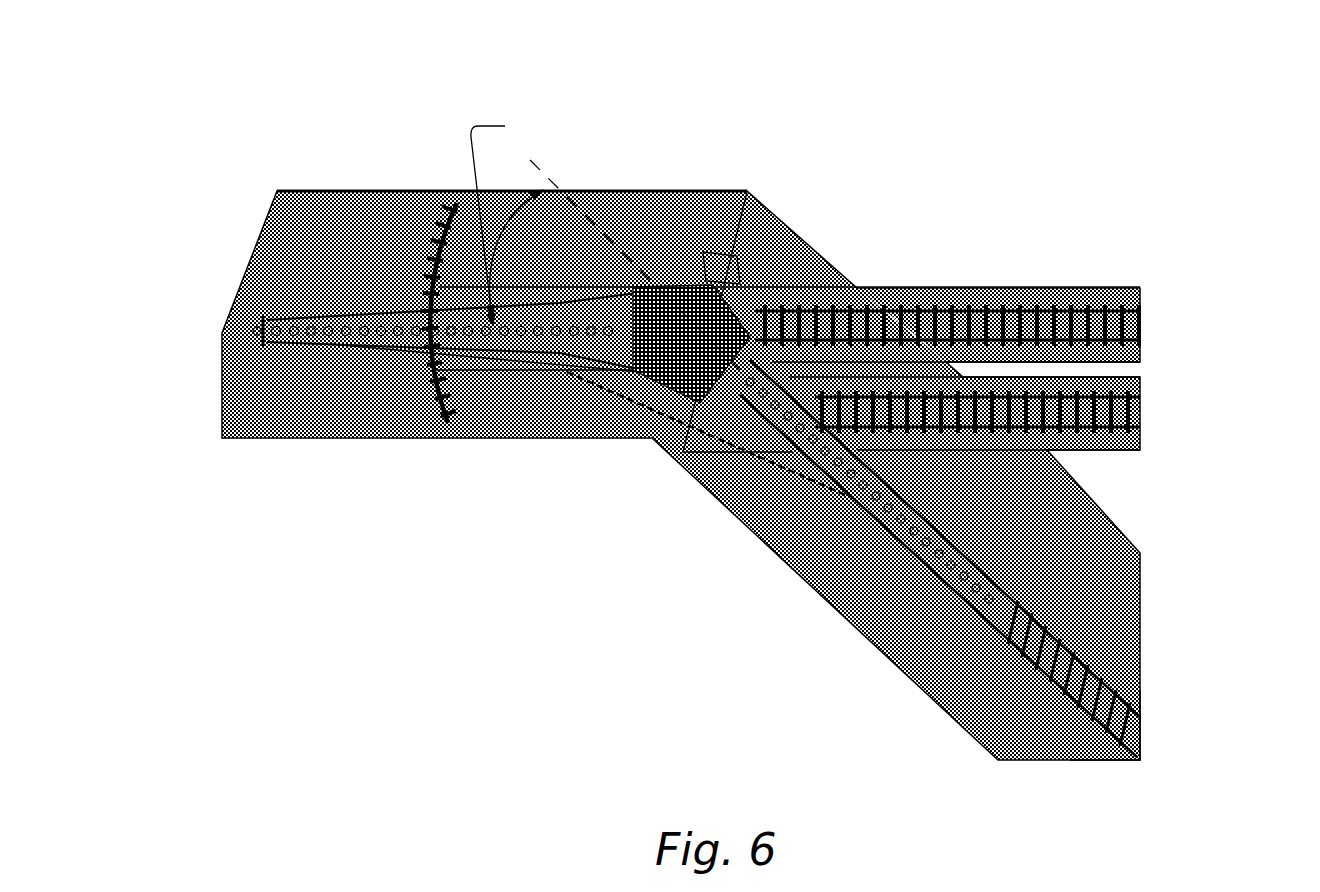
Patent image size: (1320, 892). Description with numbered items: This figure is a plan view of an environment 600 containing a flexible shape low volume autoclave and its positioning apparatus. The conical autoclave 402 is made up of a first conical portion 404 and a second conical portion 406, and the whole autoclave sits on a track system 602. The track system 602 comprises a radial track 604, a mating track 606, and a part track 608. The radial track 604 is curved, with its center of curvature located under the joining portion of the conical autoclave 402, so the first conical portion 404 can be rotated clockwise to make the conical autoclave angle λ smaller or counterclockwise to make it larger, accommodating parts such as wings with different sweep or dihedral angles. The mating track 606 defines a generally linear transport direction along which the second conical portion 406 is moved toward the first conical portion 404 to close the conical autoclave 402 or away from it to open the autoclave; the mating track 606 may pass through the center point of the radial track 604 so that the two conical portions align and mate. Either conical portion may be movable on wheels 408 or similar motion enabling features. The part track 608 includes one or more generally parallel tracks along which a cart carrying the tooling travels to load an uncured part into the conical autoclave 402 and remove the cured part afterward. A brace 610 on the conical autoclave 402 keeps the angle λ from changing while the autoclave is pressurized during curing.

The environment 600 is at (715, 411).
The track system 602 is at (1056, 220).
The radial track 604 is at (443, 186).
The conical autoclave 402 is at (530, 372).
The first conical portion 404 is at (343, 347).
The second conical portion 406 is at (885, 538).
The wheels 408 is at (746, 288).
The part track 608 is at (1152, 329).
The brace 610 is at (622, 398).
The mating track 606 is at (1162, 746).